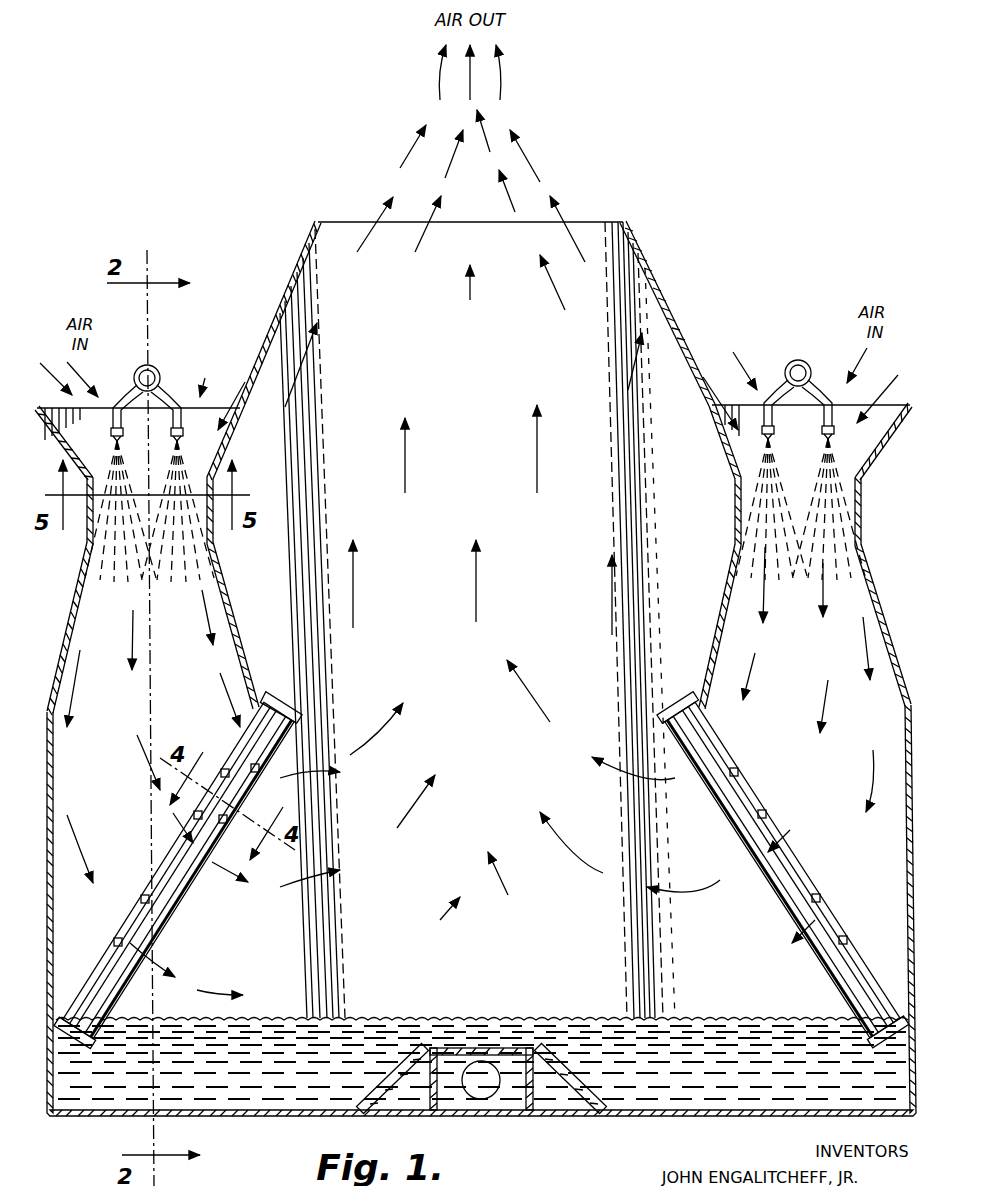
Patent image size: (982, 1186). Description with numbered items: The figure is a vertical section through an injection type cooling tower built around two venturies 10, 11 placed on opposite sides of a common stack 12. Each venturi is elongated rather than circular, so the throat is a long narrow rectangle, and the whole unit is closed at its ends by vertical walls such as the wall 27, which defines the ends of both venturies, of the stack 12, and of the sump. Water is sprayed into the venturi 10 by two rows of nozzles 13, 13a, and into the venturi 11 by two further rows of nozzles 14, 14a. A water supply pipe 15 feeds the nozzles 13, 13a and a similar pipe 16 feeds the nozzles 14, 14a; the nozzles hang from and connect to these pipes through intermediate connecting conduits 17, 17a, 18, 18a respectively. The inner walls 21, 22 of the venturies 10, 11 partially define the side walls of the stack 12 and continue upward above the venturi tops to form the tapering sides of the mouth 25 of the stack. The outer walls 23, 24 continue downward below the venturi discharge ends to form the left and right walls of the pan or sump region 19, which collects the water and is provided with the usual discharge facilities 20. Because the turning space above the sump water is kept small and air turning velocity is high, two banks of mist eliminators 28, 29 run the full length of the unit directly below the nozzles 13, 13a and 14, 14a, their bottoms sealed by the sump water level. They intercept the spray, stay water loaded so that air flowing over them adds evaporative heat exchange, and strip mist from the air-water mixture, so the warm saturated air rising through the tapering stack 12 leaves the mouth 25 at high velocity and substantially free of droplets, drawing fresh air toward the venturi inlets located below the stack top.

The venturi 10 is at (141, 678).
The venturi 11 is at (807, 645).
The common stack 12 is at (476, 583).
The row of nozzles 13 is at (112, 430).
The row of nozzles 13a is at (183, 432).
The row of nozzles 14 is at (766, 432).
The row of nozzles 14a is at (832, 432).
The water supply pipe 15 is at (152, 366).
The water supply pipe 16 is at (800, 358).
The intermediate connecting conduit 17 is at (131, 383).
The intermediate connecting conduit 17a is at (165, 389).
The intermediate connecting conduit 18 is at (778, 391).
The intermediate connecting conduit 18a is at (823, 387).
The sump region 19 is at (250, 1055).
The discharge facilities 20 is at (487, 1097).
The inner wall 21 is at (233, 624).
The inner wall 22 is at (722, 618).
The outer wall 23 is at (84, 607).
The outer wall 24 is at (896, 677).
The mouth of the stack 25 is at (592, 228).
The vertical wall 27 is at (486, 476).
The bank of mist eliminators 28 is at (172, 930).
The bank of mist eliminators 29 is at (810, 870).